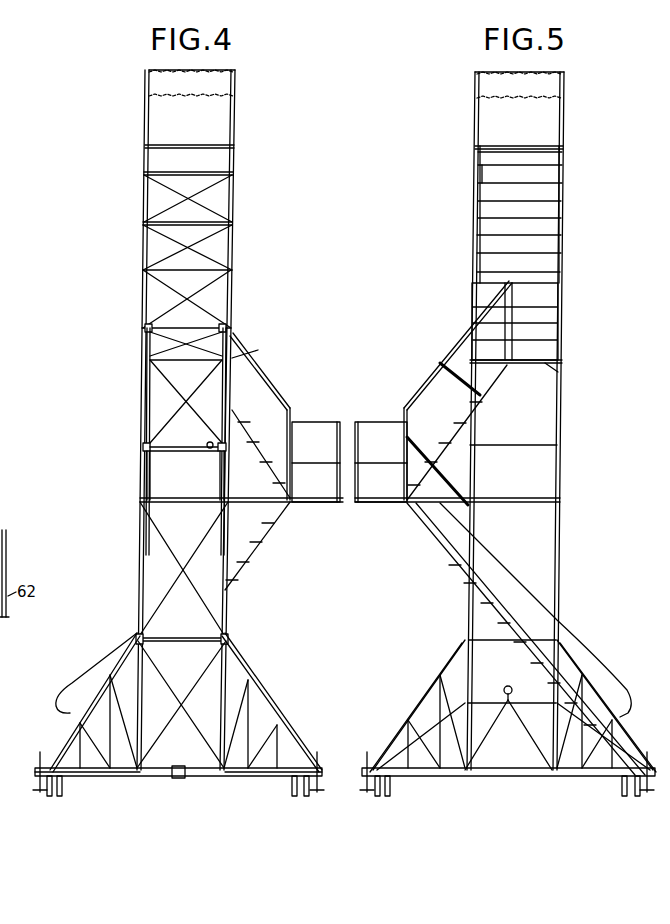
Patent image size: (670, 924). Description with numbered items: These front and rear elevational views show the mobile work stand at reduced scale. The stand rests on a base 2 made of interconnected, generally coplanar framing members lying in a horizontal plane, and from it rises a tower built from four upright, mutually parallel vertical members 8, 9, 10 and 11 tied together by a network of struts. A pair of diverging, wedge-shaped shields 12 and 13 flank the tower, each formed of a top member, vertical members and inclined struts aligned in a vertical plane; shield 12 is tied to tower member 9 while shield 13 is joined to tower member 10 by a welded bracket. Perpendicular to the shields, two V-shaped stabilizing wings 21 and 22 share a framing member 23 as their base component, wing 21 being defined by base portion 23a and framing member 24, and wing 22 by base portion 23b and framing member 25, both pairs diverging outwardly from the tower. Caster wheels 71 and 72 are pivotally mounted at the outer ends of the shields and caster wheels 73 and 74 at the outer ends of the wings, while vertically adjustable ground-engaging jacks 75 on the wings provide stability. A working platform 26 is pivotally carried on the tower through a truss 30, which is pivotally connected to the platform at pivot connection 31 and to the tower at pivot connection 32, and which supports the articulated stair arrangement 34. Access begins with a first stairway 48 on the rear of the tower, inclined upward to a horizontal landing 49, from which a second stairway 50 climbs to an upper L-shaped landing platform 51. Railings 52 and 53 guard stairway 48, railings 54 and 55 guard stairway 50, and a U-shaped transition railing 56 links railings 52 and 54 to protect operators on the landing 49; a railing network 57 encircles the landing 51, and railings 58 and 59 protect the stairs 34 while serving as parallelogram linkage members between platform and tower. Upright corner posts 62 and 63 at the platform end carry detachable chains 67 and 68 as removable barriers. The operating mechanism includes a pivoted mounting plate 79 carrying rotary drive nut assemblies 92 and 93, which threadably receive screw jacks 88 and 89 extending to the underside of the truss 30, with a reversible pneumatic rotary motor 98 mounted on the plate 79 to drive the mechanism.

In FIG. 5, the base 2 is at (506, 778).
In FIG. 5, the tower vertical member 8 is at (560, 470).
In FIG. 4, the tower vertical member 9 is at (138, 578).
In FIG. 4, the tower vertical member 10 is at (227, 592).
In FIG. 5, the tower vertical member 11 is at (476, 438).
In FIG. 5, the shield 12 is at (430, 690).
In FIG. 5, the shield 13 is at (630, 714).
In FIG. 4, the stabilizing wing 21 is at (60, 738).
In FIG. 5, the stabilizing wing 21 is at (580, 778).
In FIG. 4, the stabilizing wing 22 is at (262, 677).
In FIG. 5, the stabilizing wing 22 is at (424, 778).
In FIG. 4, the framing member 23 is at (190, 778).
In FIG. 4, the base member portion 23a is at (88, 778).
In FIG. 4, the base member portion 23b is at (262, 778).
In FIG. 4, the framing member 24 is at (126, 660).
In FIG. 4, the framing member 25 is at (284, 720).
In FIG. 5, the working platform 26 is at (478, 152).
In FIG. 4, the truss 30 is at (214, 283).
In FIG. 5, the pivot connection 31 is at (566, 150).
In FIG. 5, the pivot connection 32 is at (560, 359).
In FIG. 5, the articulated stair arrangement 34 is at (545, 216).
In FIG. 4, the first stairway 48 is at (258, 548).
In FIG. 5, the first stairway 48 is at (449, 568).
In FIG. 4, the landing 49 is at (290, 503).
In FIG. 4, the second stairway 50 is at (241, 434).
In FIG. 5, the second stairway 50 is at (444, 446).
In FIG. 5, the upper landing platform 51 is at (558, 372).
In FIG. 5, the railing 52 is at (588, 640).
In FIG. 4, the railing 53 is at (98, 655).
In FIG. 4, the railing 54 is at (252, 368).
In FIG. 5, the railing 55 is at (440, 363).
In FIG. 4, the transition railing 56 is at (310, 422).
In FIG. 5, the transition railing 56 is at (358, 488).
In FIG. 5, the railing network 57 is at (560, 300).
In FIG. 5, the railing 58 is at (478, 183).
In FIG. 5, the railing 59 is at (564, 190).
In FIG. 4, the corner post 62 is at (144, 122).
In FIG. 5, the corner post 62 is at (565, 128).
In FIG. 4, the corner post 63 is at (235, 138).
In FIG. 5, the corner post 63 is at (474, 132).
In FIG. 4, the detachable chain 67 is at (221, 70).
In FIG. 5, the detachable chain 67 is at (524, 76).
In FIG. 4, the detachable chain 68 is at (199, 96).
In FIG. 5, the detachable chain 68 is at (538, 99).
In FIG. 4, the caster wheel 71 is at (49, 797).
In FIG. 5, the caster wheel 71 is at (637, 797).
In FIG. 4, the caster wheel 72 is at (306, 797).
In FIG. 5, the caster wheel 72 is at (378, 797).
In FIG. 4, the caster wheel 73 is at (60, 797).
In FIG. 5, the caster wheel 73 is at (623, 797).
In FIG. 4, the caster wheel 74 is at (294, 797).
In FIG. 5, the caster wheel 74 is at (388, 797).
In FIG. 4, the jack 75 is at (36, 776).
In FIG. 5, the jack 75 is at (366, 766).
In FIG. 4, the mounting plate 79 is at (168, 451).
In FIG. 4, the screw jack 88 is at (144, 389).
In FIG. 4, the screw jack 89 is at (226, 400).
In FIG. 4, the rotary drive nut assembly 92 is at (142, 446).
In FIG. 4, the rotary drive nut assembly 93 is at (232, 451).
In FIG. 4, the rotary motor 98 is at (210, 449).